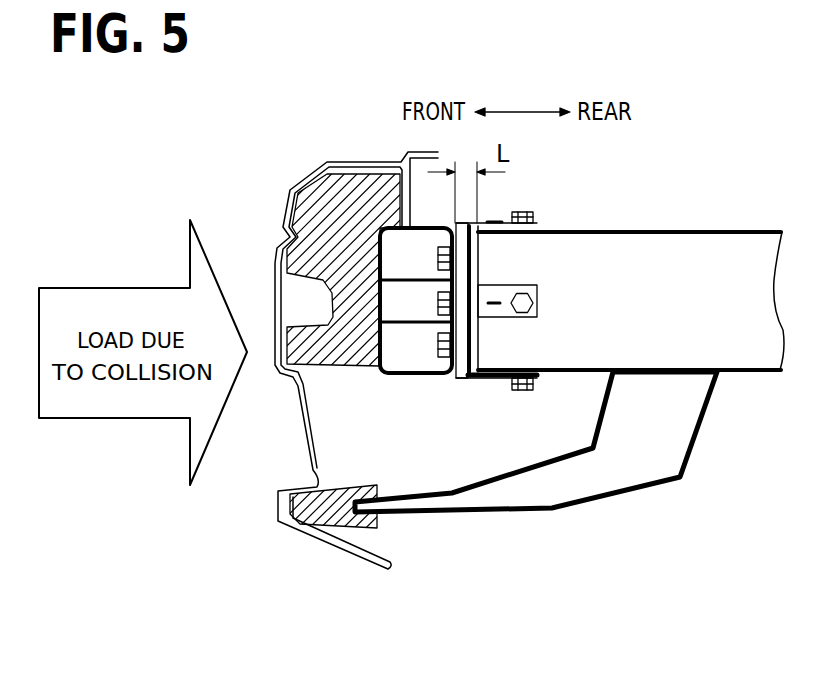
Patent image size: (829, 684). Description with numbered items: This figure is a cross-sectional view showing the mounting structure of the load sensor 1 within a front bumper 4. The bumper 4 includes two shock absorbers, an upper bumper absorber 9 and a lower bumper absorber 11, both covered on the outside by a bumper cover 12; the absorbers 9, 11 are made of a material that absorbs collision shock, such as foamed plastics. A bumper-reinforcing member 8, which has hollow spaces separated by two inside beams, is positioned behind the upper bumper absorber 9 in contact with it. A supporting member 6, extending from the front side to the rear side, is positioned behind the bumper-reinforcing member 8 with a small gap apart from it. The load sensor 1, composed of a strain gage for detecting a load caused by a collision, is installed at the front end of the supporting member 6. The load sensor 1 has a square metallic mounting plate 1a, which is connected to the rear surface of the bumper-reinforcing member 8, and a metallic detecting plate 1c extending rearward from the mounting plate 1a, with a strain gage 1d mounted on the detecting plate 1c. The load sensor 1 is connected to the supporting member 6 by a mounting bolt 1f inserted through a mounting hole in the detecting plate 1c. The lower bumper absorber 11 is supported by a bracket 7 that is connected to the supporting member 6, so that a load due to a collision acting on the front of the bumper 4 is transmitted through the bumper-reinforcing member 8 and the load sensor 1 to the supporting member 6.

The load sensor 1 is at (500, 306).
The mounting plate 1a is at (453, 375).
The detecting plate 1c is at (540, 291).
The strain gage 1d is at (493, 306).
The mounting bolt 1f is at (522, 391).
The front bumper 4 is at (226, 520).
The supporting member 6 is at (652, 231).
The bracket 7 is at (623, 492).
The bumper-reinforcing member 8 is at (393, 371).
The upper bumper absorber 9 is at (350, 182).
The lower bumper absorber 11 is at (380, 527).
The bumper cover 12 is at (281, 207).